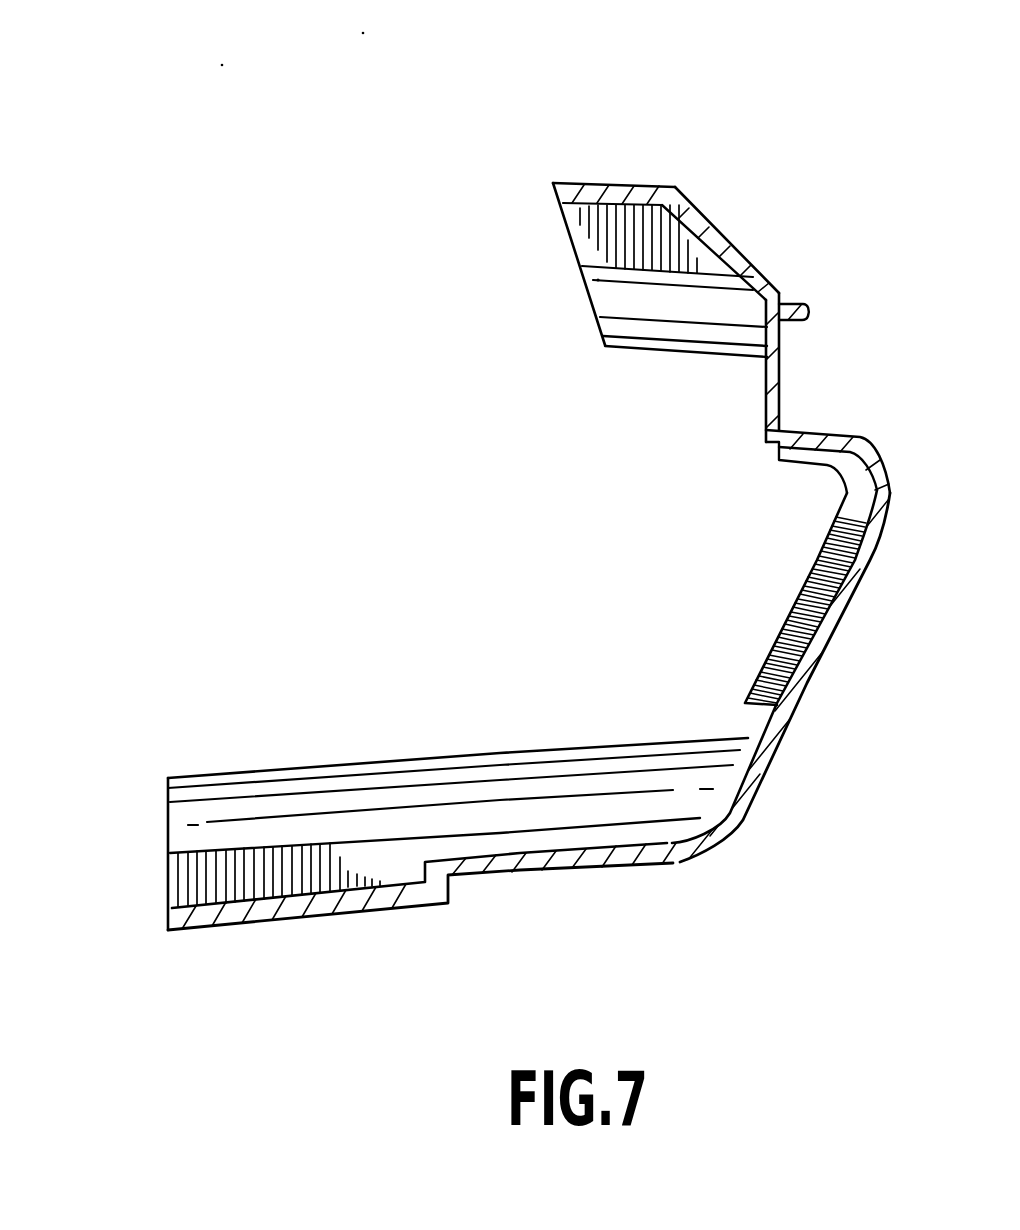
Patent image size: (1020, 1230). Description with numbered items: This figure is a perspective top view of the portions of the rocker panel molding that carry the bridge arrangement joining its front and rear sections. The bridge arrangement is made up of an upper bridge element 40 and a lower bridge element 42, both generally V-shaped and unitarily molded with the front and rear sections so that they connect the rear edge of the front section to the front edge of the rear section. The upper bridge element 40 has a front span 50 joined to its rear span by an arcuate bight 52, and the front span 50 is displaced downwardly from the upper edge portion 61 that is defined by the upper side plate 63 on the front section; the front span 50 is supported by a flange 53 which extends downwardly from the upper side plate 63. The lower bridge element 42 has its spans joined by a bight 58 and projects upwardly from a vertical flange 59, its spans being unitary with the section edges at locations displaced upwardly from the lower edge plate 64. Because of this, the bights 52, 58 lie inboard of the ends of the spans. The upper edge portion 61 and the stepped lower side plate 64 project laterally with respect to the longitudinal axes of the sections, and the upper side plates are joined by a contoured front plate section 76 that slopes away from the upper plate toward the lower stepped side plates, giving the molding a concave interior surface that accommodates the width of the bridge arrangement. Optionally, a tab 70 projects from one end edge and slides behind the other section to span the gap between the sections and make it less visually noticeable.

The upper bridge element 40 is at (690, 350).
The lower bridge element 42 is at (483, 753).
The front span 50 is at (633, 302).
The arcuate bight 52 is at (624, 350).
The flange 53 is at (592, 232).
The bight 58 is at (268, 772).
The vertical flange 59 is at (190, 875).
The upper edge portion 61 is at (602, 184).
The upper side plate 63 is at (648, 184).
The lower edge plate 64 is at (287, 920).
The tab 70 is at (807, 597).
The contoured front plate section 76 is at (782, 303).